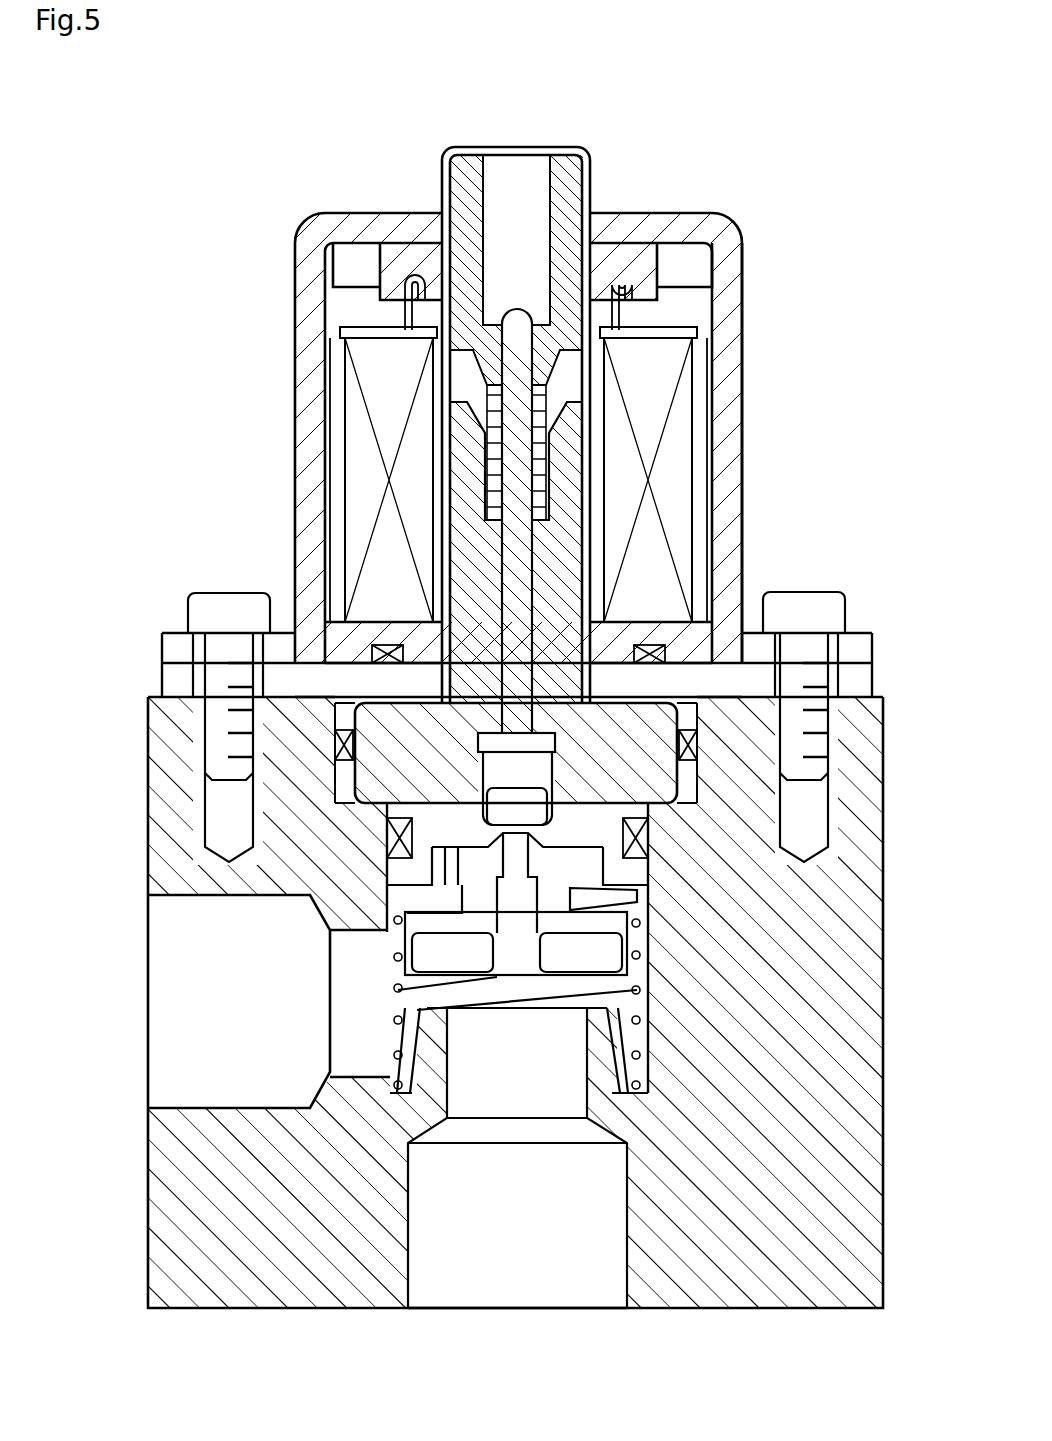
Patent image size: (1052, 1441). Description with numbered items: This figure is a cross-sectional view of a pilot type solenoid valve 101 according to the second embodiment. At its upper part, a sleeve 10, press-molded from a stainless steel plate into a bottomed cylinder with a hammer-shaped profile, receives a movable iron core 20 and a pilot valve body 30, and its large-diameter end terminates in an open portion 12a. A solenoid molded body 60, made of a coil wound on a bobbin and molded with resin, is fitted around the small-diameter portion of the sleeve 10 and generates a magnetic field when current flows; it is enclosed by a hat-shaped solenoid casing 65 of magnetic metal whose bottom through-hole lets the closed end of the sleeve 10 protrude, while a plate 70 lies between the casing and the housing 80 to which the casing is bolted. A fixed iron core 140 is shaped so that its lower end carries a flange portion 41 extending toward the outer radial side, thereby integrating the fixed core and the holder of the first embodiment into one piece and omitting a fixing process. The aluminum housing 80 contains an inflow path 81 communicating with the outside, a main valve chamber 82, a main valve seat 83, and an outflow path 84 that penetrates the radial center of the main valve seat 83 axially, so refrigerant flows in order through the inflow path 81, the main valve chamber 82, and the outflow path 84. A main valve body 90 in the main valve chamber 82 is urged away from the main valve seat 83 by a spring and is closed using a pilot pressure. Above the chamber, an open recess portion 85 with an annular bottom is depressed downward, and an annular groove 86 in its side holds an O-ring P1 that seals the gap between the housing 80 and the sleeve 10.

The solenoid valve 101 is at (733, 126).
The sleeve 10 is at (506, 134).
The movable iron core 20 is at (566, 147).
The pilot valve body 30 is at (508, 294).
The solenoid molded body 60 is at (692, 250).
The solenoid casing 65 is at (742, 276).
The fixed iron core 140 is at (483, 509).
The plate 70 is at (162, 673).
The flange portion 41 is at (405, 720).
The O-ring P1 is at (352, 714).
The open portion 12a is at (673, 797).
The housing 80 is at (175, 822).
The groove 86 is at (368, 776).
The inflow path 81 is at (220, 897).
The open recess portion 85 is at (267, 897).
The main valve body 90 is at (645, 905).
The main valve chamber 82 is at (648, 925).
The main valve seat 83 is at (640, 1003).
The outflow path 84 is at (627, 1250).